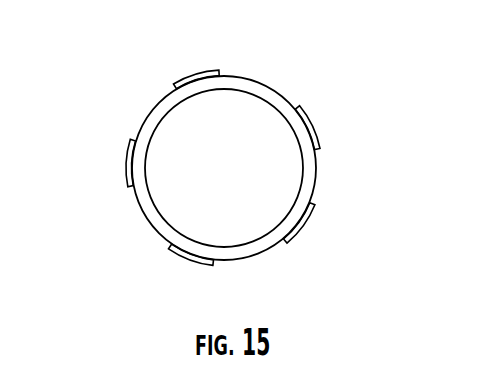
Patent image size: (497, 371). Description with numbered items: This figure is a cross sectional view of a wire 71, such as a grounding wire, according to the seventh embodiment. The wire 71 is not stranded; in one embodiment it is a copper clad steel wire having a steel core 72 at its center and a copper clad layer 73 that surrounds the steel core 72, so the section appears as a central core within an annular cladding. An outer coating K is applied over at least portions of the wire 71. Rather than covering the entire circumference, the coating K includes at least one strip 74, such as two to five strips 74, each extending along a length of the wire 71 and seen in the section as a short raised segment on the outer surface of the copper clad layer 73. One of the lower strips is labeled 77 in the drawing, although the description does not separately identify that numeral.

The wire 71 is at (154, 62).
The steel core 72 is at (236, 180).
The copper clad layer 73 is at (313, 175).
The strip 74 is at (198, 68).
The tab 77 is at (196, 266).
The outer coating K is at (216, 75).